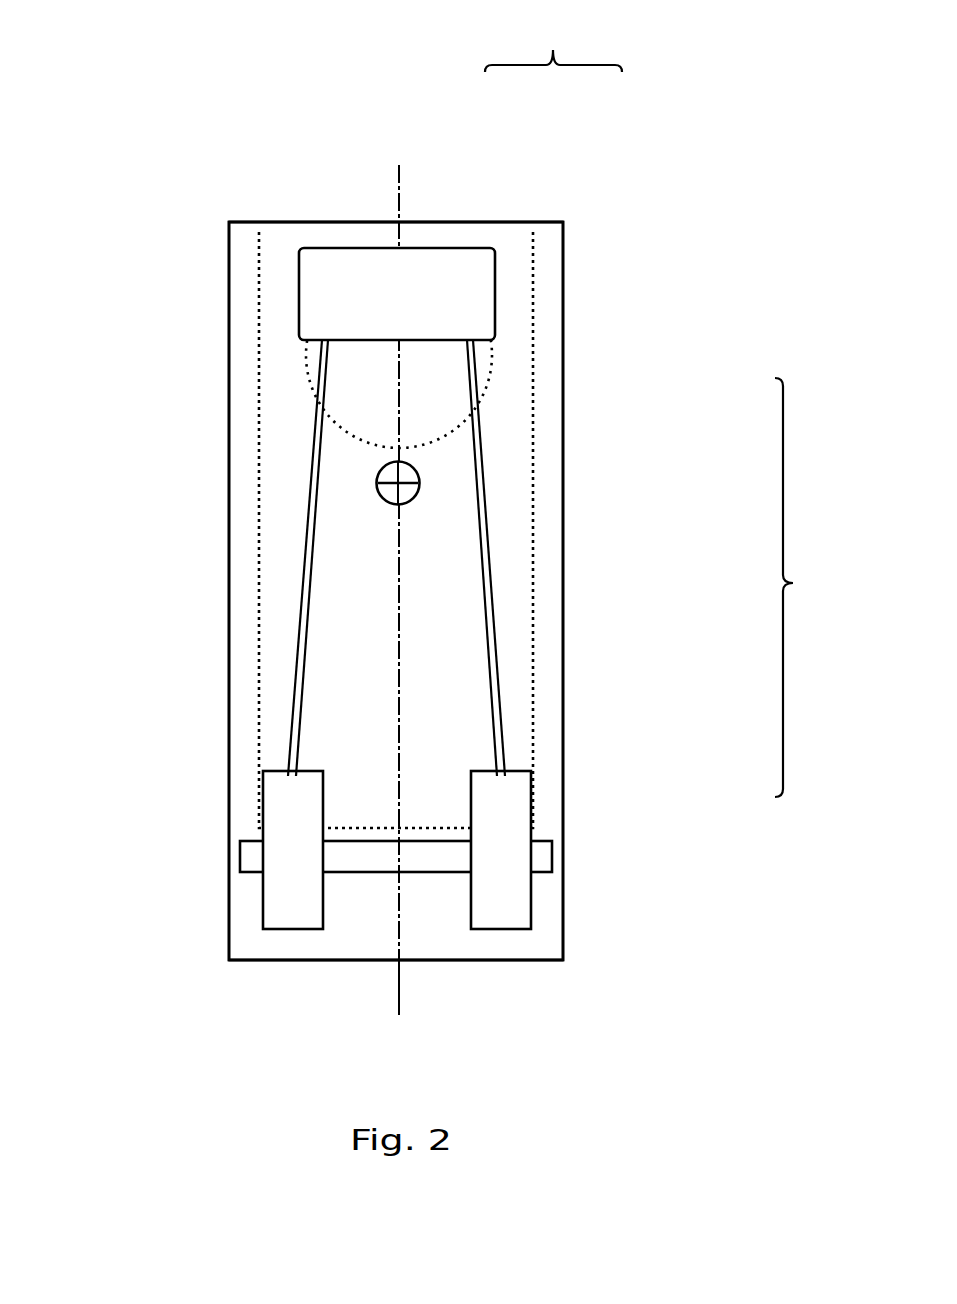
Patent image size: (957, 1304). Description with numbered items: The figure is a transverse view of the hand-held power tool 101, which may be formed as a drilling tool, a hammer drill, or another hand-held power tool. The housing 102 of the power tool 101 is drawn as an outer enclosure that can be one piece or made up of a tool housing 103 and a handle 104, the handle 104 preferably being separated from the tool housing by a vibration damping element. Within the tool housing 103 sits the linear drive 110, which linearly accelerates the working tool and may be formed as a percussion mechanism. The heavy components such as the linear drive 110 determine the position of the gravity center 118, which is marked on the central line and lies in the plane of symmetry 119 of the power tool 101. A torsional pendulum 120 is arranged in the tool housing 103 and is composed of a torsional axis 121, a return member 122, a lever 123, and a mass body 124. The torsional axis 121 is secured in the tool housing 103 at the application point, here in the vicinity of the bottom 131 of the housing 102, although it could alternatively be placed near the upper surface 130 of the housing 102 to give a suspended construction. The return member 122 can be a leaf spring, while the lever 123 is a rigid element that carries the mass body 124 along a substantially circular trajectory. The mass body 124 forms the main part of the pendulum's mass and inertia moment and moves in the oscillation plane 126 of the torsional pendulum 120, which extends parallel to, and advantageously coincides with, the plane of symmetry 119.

The hand-held power tool 101 is at (130, 160).
The housing 102 is at (553, 39).
The tool housing 103 is at (552, 233).
The handle 104 is at (484, 233).
The linear drive 110 is at (338, 278).
The gravity center 118 is at (377, 491).
The plane of symmetry 119 is at (393, 999).
The torsional pendulum 120 is at (816, 587).
The torsional axis 121 is at (422, 857).
The return member 122 is at (532, 889).
The lever 123 is at (478, 386).
The mass body 124 is at (482, 280).
The oscillation plane 126 is at (397, 555).
The upper surface 130 is at (420, 222).
The bottom 131 is at (494, 960).